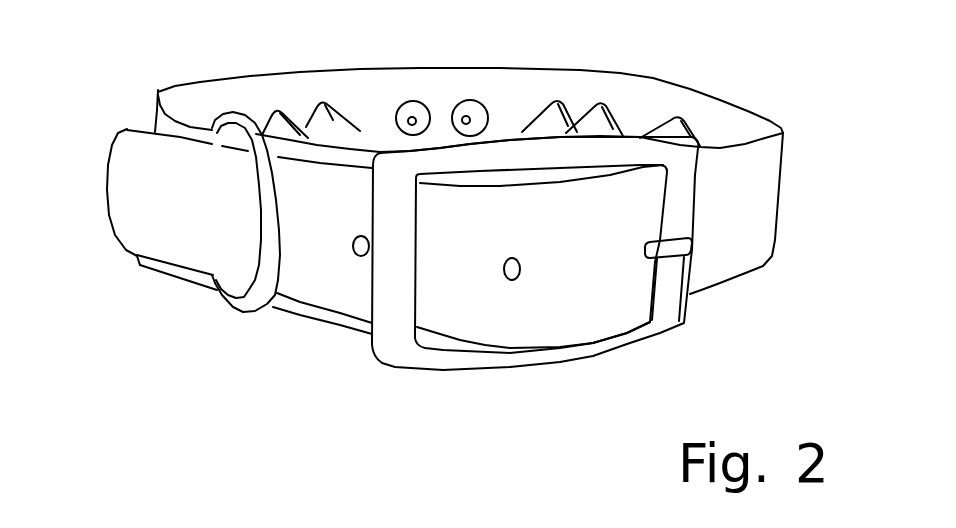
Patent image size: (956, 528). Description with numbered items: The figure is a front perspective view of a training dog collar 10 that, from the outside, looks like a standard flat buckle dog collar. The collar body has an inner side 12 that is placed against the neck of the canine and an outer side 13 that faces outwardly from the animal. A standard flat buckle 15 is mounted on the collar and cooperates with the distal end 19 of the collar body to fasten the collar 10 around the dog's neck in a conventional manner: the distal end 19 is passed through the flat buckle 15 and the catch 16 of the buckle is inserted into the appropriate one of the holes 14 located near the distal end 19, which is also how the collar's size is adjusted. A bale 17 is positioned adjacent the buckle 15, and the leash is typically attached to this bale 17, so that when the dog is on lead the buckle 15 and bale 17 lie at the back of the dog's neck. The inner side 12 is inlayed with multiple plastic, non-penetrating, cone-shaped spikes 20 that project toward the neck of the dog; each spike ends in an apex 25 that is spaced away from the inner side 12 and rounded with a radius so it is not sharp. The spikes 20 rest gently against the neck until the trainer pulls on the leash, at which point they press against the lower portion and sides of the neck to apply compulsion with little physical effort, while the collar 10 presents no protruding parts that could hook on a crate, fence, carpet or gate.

The training dog collar 10 is at (179, 374).
The inner side 12 is at (513, 90).
The outer side 13 is at (760, 172).
The holes 14 is at (468, 239).
The flat buckle 15 is at (485, 275).
The catch 16 is at (693, 250).
The bale 17 is at (160, 206).
The distal end 19 is at (97, 208).
The spikes 20 is at (319, 101).
The apex 25 is at (520, 128).